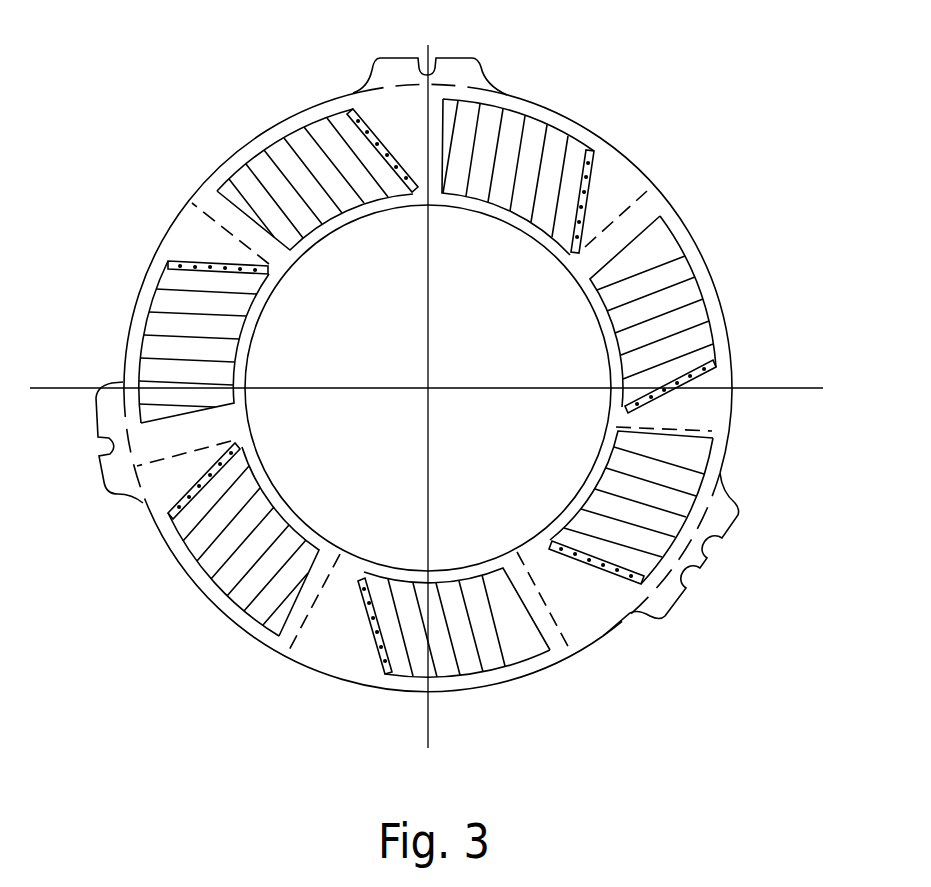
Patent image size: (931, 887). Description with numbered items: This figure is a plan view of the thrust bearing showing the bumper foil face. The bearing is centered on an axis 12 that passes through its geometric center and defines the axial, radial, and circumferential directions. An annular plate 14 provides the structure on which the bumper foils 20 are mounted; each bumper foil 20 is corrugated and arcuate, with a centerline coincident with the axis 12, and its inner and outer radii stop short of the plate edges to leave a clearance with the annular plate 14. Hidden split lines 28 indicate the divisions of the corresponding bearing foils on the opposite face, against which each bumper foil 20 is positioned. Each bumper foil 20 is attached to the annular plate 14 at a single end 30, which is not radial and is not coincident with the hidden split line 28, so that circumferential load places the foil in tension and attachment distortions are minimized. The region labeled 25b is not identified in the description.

The axis 12 is at (429, 387).
The annular plate 14 is at (200, 207).
The bumper foil 20 is at (427, 346).
The plate portion 25b is at (343, 630).
The hidden split line 28 is at (647, 198).
The end 30 is at (594, 154).